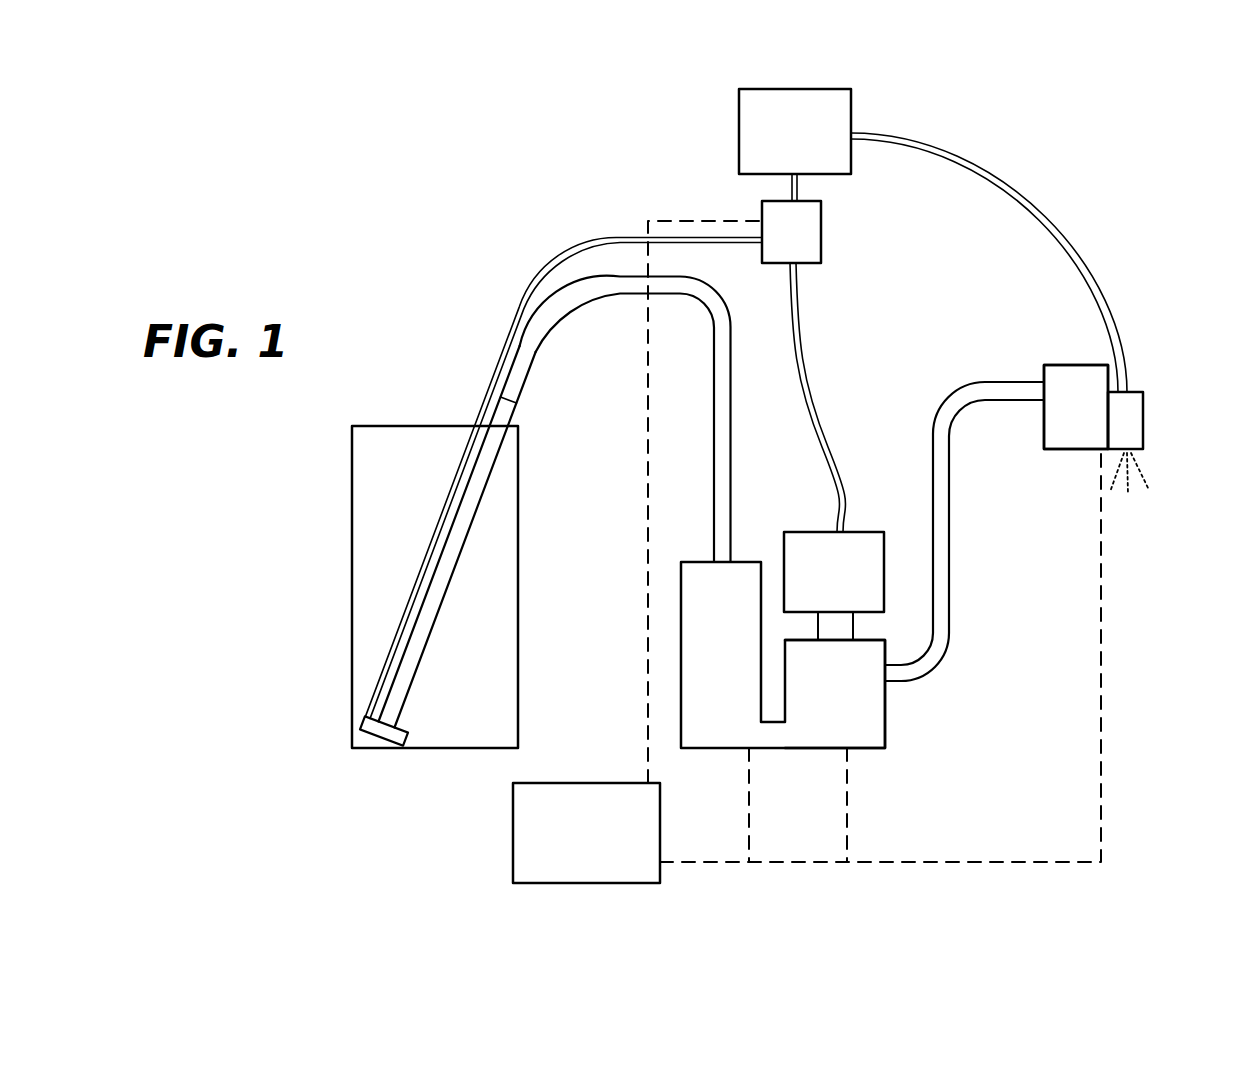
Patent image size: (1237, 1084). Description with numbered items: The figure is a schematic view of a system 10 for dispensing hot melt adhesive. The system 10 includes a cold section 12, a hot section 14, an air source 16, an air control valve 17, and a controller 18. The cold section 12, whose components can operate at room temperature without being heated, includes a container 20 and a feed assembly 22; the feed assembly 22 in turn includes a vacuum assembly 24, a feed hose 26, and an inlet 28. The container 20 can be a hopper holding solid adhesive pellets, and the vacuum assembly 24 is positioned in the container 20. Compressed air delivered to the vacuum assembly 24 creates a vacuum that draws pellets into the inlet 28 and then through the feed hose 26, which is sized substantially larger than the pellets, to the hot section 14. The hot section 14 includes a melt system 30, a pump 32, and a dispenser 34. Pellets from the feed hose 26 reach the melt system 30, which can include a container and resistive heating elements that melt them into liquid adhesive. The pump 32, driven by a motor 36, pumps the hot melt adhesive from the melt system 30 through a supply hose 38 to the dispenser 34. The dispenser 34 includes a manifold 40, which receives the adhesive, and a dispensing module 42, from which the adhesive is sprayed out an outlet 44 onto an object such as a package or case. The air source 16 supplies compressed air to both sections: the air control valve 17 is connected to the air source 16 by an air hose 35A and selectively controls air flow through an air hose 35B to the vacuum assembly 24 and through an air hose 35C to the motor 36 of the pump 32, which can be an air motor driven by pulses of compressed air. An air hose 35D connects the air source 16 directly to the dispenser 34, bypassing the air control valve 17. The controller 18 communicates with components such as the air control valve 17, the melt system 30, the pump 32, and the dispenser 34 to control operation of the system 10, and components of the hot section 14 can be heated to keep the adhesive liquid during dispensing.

The system 10 is at (386, 195).
The cold section 12 is at (406, 362).
The hot section 14 is at (868, 394).
The air source 16 is at (739, 135).
The air control valve 17 is at (762, 210).
The controller 18 is at (612, 783).
The container 20 is at (352, 595).
The feed assembly 22 is at (531, 322).
The vacuum assembly 24 is at (424, 751).
The feed hose 26 is at (616, 296).
The inlet 28 is at (372, 740).
The melt system 30 is at (710, 749).
The pump 32 is at (872, 764).
The dispenser 34 is at (1073, 353).
The air hose 35A is at (798, 185).
The air hose 35B is at (618, 237).
The air hose 35C is at (801, 345).
The air hose 35D is at (958, 152).
The motor 36 is at (822, 532).
The supply hose 38 is at (951, 544).
The manifold 40 is at (1057, 450).
The dispensing module 42 is at (1158, 412).
The outlet 44 is at (1138, 452).